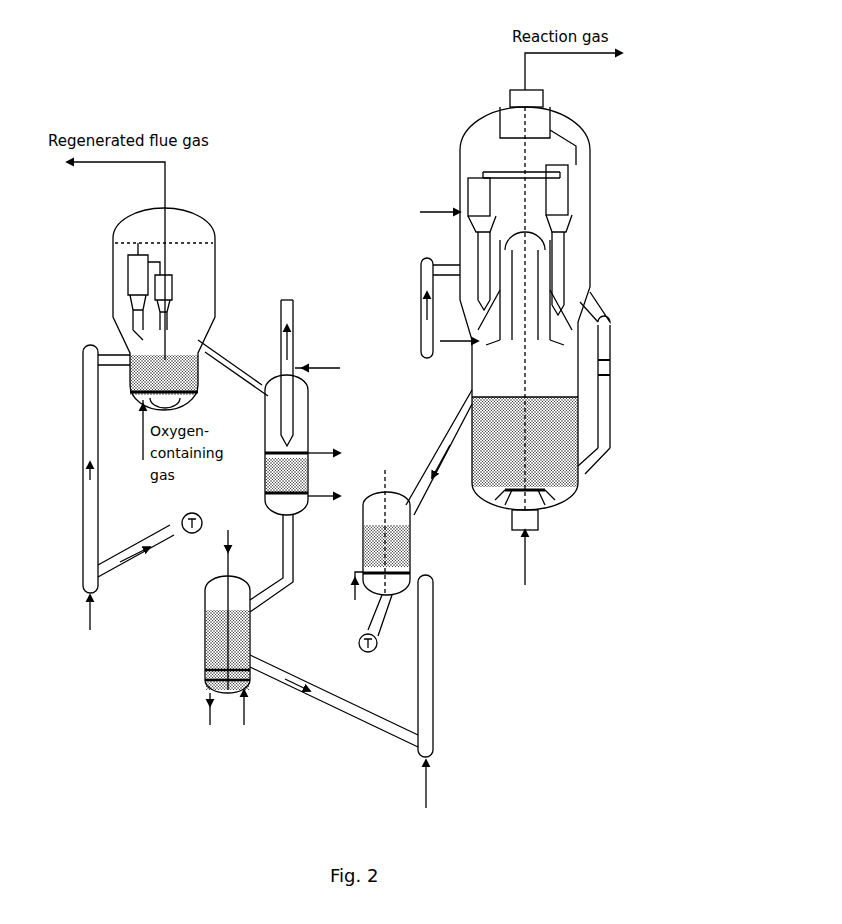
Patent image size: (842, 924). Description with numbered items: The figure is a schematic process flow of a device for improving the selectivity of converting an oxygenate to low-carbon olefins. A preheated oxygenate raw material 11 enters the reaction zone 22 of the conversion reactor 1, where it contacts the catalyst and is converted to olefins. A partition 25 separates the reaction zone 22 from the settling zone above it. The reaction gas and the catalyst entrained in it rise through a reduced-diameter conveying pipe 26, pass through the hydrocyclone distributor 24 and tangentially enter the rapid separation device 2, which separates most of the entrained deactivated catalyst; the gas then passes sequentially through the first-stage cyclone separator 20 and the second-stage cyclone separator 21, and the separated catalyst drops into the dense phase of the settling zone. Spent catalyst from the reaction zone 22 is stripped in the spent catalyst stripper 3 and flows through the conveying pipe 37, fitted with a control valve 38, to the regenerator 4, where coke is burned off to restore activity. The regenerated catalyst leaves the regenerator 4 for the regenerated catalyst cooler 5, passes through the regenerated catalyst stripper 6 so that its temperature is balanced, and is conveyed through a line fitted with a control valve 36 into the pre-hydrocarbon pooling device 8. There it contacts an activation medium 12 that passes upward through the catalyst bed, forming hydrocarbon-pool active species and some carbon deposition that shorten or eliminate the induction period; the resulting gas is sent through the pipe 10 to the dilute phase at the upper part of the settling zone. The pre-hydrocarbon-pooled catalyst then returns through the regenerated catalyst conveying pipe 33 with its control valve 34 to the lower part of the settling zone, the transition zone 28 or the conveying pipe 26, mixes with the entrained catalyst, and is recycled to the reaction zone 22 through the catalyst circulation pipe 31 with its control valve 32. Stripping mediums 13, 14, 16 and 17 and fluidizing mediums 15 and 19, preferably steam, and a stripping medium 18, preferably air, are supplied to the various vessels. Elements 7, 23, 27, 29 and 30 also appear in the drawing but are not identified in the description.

The conversion reactor 1 is at (596, 175).
The rapid separation device 2 is at (592, 283).
The spent catalyst stripper 3 is at (612, 440).
The regenerator 4 is at (215, 265).
The regenerated catalyst cooler 5 is at (308, 403).
The regenerated catalyst stripper 6 is at (308, 480).
The second stripper 7 is at (386, 490).
The pre-hydrocarbon pooling device 8 is at (205, 608).
The pipe 10 is at (227, 606).
The oxygenate raw material 11 is at (525, 568).
The activation medium 12 is at (244, 716).
The stripping medium 13 is at (209, 718).
The stripping medium 14 is at (331, 496).
The fluidizing medium 15 is at (330, 453).
The stripping medium 16 is at (356, 592).
The stripping medium 17 is at (426, 792).
The stripping medium 18 is at (459, 331).
The fluidizing medium 19 is at (432, 212).
The first-stage cyclone separator 20 is at (286, 324).
The second-stage cyclone separator 21 is at (525, 273).
The reaction zone 22 is at (460, 250).
The lift pipe 23 is at (437, 650).
The hydrocyclone distributor 24 is at (560, 372).
The partition 25 is at (270, 660).
The reduced-diameter conveying pipe 26 is at (526, 356).
The catalyst transfer pipe 27 is at (388, 620).
The transition zone 28 is at (293, 535).
The catalyst transfer pipe 29 is at (293, 562).
The cyclone 30 is at (526, 201).
The catalyst circulation pipe 31 is at (612, 345).
The control valve 32 is at (612, 385).
The regenerated catalyst conveying pipe 33 is at (422, 292).
The control valve 34 is at (380, 705).
The control valve 36 is at (140, 530).
The conveying pipe 37 is at (88, 395).
The control valve 38 is at (113, 526).